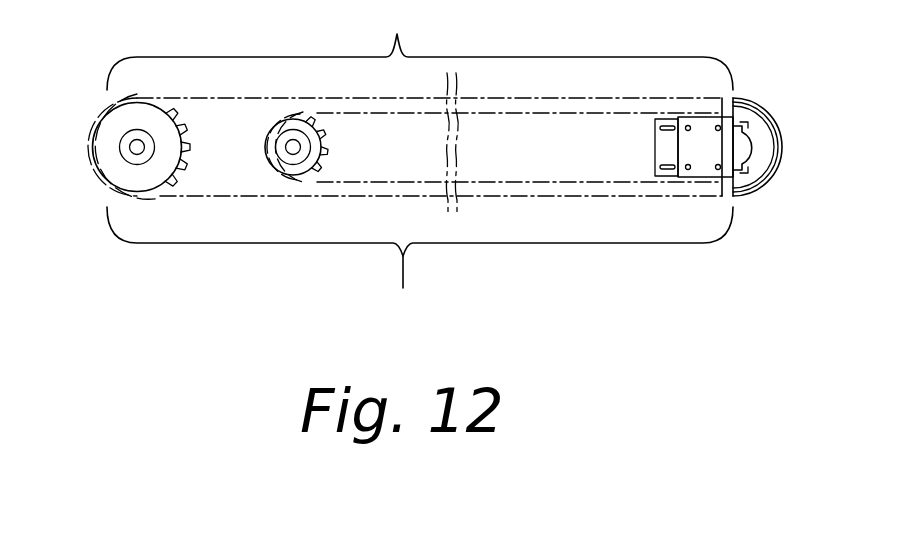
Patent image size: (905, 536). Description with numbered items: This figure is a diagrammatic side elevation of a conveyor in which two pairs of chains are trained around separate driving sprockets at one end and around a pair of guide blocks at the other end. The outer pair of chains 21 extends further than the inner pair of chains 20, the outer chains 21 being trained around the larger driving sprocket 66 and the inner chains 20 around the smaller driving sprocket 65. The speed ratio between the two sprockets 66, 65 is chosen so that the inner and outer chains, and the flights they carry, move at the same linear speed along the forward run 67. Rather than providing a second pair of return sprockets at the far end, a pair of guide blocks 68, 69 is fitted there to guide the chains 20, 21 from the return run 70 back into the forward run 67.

The inner pair of chains 20 is at (381, 113).
The outer pair of chains 21 is at (216, 98).
The driving sprocket 65 is at (273, 158).
The driving sprocket 66 is at (118, 165).
The forward run 67 is at (420, 50).
The guide block 68 is at (710, 148).
The guide block 69 is at (763, 137).
The return run 70 is at (420, 262).